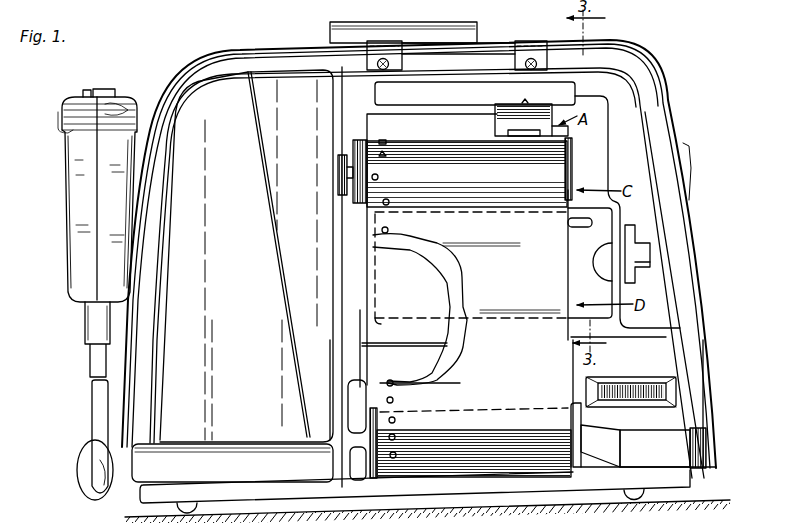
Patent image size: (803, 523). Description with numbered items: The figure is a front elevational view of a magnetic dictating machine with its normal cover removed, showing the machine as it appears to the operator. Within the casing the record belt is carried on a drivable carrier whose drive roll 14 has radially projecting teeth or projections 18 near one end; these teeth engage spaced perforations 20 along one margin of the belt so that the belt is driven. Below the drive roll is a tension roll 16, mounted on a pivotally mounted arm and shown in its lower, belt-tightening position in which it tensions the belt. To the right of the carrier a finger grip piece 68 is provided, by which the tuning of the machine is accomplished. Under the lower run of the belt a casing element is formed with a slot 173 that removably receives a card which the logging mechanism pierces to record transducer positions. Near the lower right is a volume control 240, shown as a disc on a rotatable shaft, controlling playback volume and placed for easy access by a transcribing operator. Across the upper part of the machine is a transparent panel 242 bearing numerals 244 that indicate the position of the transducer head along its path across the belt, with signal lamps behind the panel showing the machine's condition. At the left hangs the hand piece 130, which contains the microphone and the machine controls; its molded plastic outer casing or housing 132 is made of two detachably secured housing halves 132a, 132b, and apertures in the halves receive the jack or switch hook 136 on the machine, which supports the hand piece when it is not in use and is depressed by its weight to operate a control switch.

The drive roll 14 is at (573, 155).
The tension roll 16 is at (571, 409).
The teeth or projections 18 is at (388, 200).
The perforations 20 is at (396, 419).
The finger grip piece 68 is at (649, 257).
The hand piece 130 is at (63, 177).
The outer casing or housing 132 is at (69, 270).
The housing half 132a is at (75, 285).
The housing half 132b is at (122, 255).
The jack or switch hook 136 is at (122, 94).
The slot 173 is at (605, 258).
The volume control 240 is at (667, 393).
The panel 242 is at (561, 81).
The numerals 244 is at (478, 83).